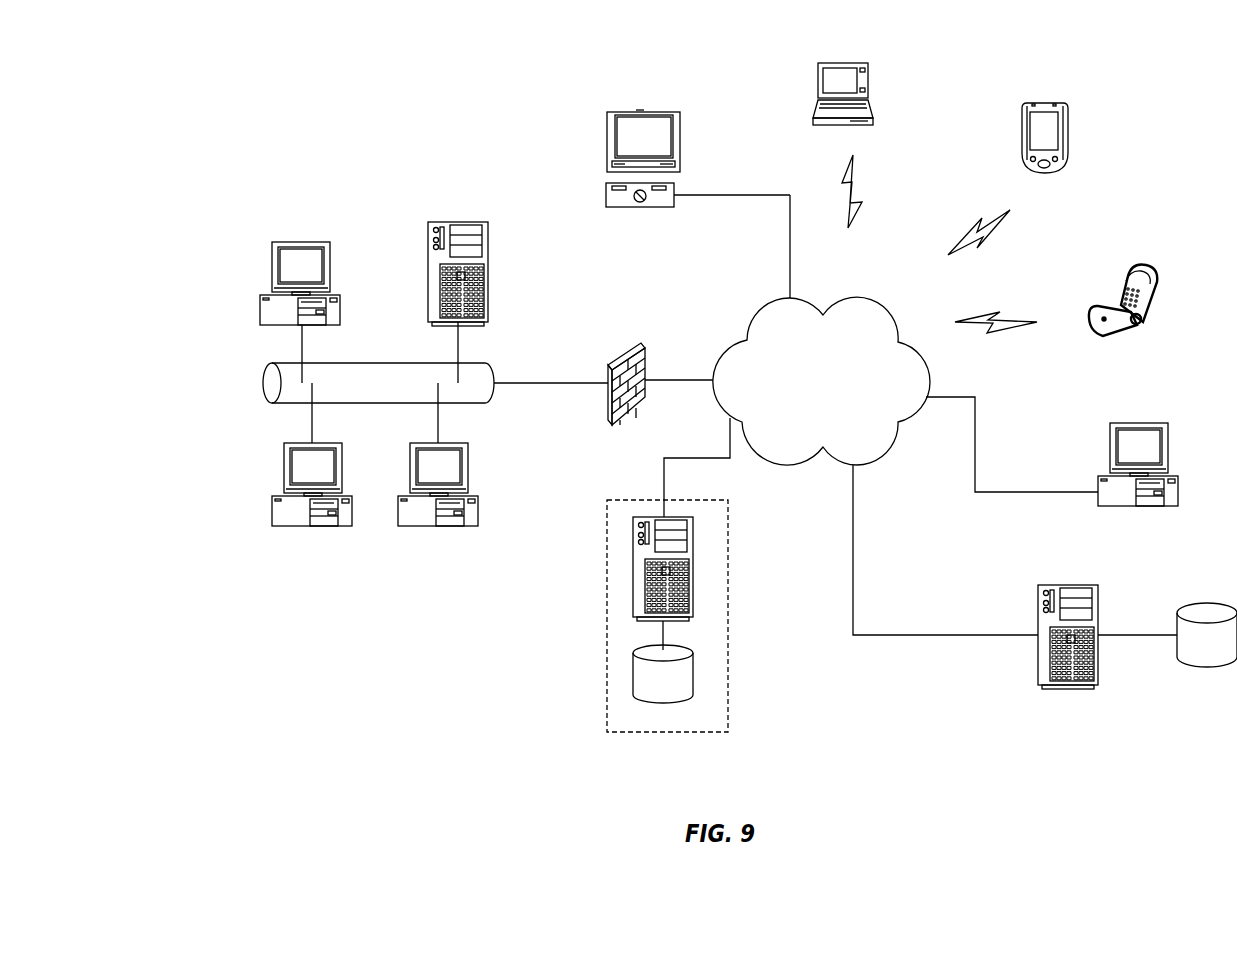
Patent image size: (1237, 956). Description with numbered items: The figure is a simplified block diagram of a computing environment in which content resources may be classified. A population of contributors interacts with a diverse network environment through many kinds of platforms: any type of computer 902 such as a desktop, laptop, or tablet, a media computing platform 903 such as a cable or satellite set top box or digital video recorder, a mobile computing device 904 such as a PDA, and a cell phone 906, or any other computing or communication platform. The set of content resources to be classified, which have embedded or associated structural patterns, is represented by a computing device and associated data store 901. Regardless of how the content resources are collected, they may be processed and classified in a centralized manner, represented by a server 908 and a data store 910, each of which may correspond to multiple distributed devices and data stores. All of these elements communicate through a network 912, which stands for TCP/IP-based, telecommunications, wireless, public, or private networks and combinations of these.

The computing device and associated data store 901 is at (715, 616).
The computer 902 is at (681, 267).
The media computing platform 903 is at (654, 158).
The mobile computing device 904 is at (999, 122).
The cell phone 906 is at (1097, 285).
The server 908 is at (1029, 615).
The data store 910 is at (1178, 614).
The network 912 is at (801, 368).